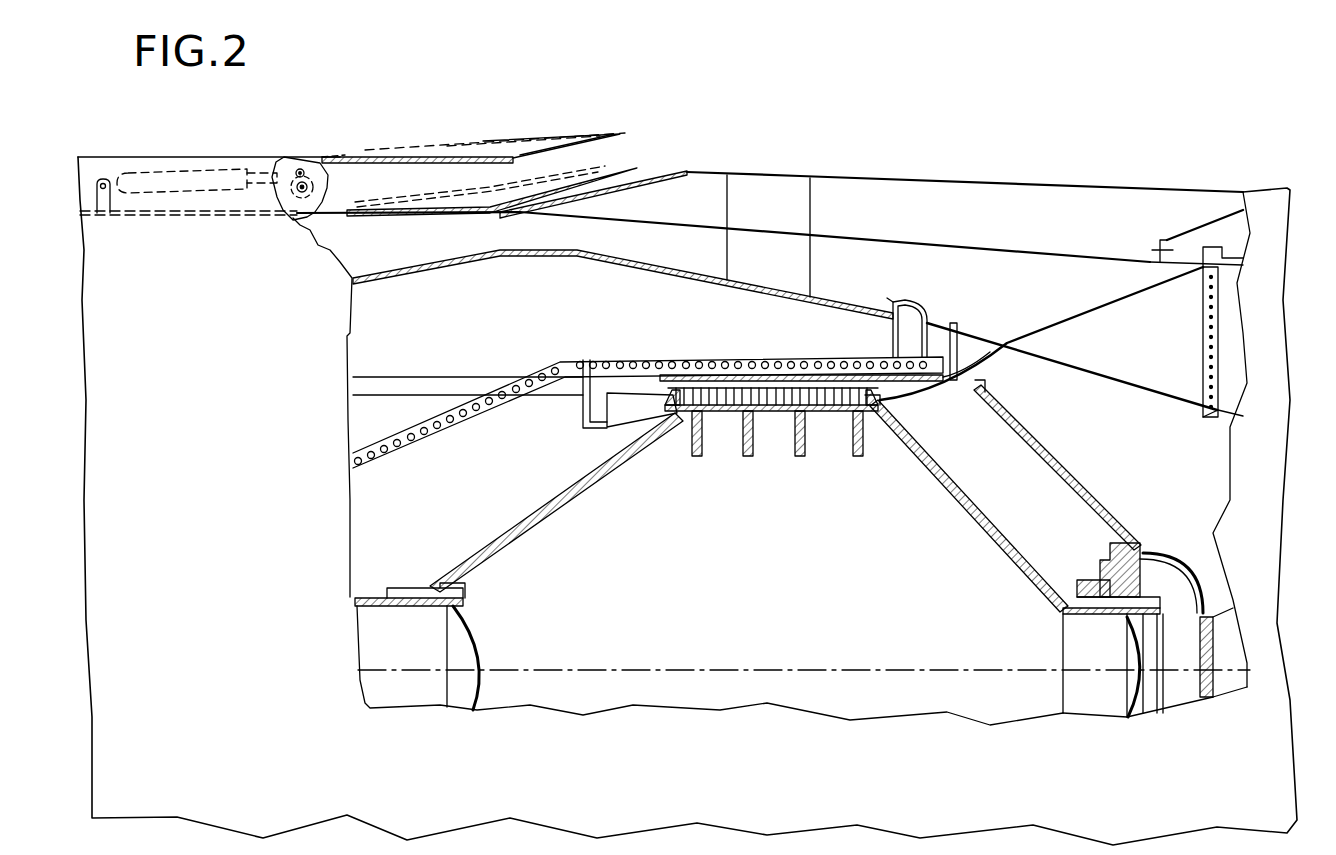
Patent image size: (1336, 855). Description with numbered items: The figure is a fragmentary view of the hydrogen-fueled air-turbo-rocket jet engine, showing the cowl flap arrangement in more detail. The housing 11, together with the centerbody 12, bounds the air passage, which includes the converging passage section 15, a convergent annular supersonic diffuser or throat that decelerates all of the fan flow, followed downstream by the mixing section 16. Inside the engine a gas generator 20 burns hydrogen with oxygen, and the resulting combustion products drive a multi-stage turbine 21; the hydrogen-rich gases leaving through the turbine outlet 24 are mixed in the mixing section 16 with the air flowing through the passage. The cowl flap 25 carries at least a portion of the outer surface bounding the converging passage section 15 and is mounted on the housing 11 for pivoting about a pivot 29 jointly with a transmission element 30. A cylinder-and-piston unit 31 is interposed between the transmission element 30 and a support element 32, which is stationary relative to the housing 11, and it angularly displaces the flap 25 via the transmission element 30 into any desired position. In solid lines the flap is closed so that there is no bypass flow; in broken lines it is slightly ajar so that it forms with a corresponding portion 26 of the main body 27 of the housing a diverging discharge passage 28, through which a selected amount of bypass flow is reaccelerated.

The housing 11 is at (257, 177).
The centerbody 12 is at (843, 297).
The converging passage section 15 is at (393, 252).
The mixing section 16 is at (1059, 300).
The gas generator 20 is at (637, 412).
The multi-stage turbine 21 is at (760, 405).
The turbine outlet 24 is at (1180, 333).
The cowl flap 25 is at (513, 157).
The portion of main body 26 is at (705, 205).
The main body 27 is at (881, 215).
The discharge passage 28 is at (613, 157).
The pivot 29 is at (302, 195).
The transmission element 30 is at (302, 171).
The cylinder-and-piston unit 31 is at (163, 183).
The support element 32 is at (93, 197).